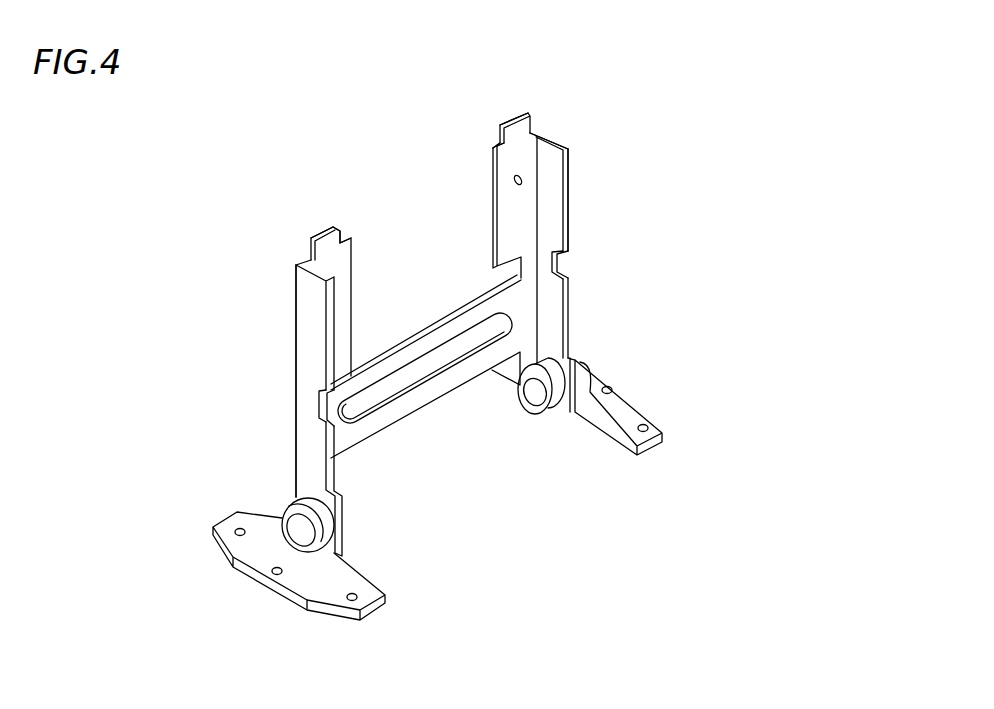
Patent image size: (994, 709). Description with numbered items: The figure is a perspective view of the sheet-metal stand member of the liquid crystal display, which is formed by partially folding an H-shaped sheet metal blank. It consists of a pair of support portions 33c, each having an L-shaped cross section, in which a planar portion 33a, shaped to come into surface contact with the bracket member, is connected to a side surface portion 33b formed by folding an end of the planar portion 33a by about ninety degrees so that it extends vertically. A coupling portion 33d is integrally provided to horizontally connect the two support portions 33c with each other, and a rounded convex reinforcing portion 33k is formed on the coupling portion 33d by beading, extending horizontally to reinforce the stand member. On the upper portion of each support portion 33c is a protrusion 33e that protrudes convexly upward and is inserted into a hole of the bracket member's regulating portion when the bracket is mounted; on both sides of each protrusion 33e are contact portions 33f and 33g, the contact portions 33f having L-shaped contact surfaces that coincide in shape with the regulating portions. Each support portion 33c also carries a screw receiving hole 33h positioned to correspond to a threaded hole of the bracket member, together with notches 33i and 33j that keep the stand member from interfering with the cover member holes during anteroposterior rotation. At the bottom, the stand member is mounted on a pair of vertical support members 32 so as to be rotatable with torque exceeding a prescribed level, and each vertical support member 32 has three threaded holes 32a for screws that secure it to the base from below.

The vertical support member 32 is at (243, 572).
The threaded hole 32a is at (239, 529).
The planar portion 33a is at (345, 318).
The side surface portion 33b is at (307, 314).
The support portion 33c is at (295, 360).
The coupling portion 33d is at (432, 390).
The protrusion 33e is at (328, 228).
The contact portion 33f is at (307, 265).
The contact portion 33g is at (343, 242).
The screw receiving hole 33h is at (340, 290).
The notch 33i is at (340, 367).
The notch 33j is at (319, 418).
The reinforcing portion 33k is at (370, 405).